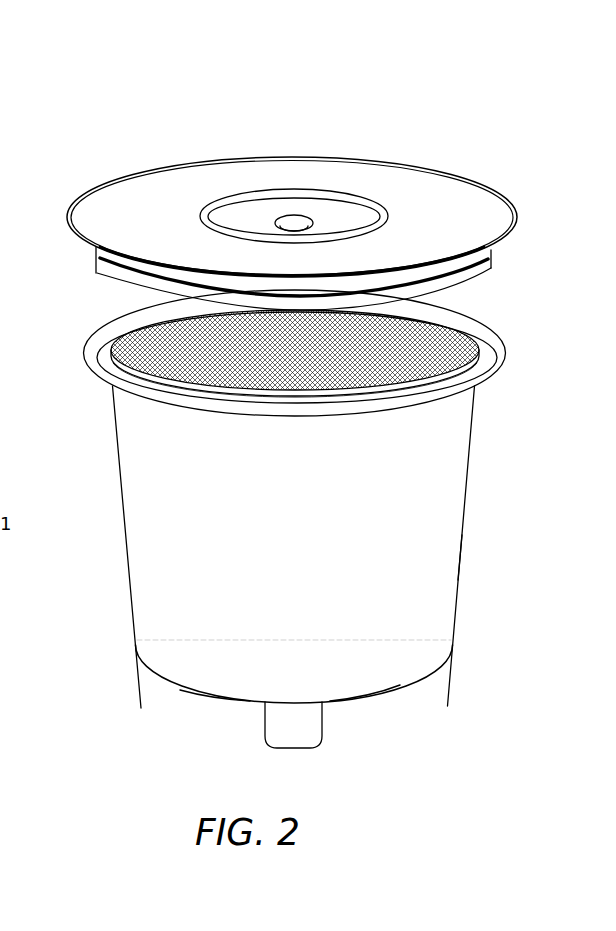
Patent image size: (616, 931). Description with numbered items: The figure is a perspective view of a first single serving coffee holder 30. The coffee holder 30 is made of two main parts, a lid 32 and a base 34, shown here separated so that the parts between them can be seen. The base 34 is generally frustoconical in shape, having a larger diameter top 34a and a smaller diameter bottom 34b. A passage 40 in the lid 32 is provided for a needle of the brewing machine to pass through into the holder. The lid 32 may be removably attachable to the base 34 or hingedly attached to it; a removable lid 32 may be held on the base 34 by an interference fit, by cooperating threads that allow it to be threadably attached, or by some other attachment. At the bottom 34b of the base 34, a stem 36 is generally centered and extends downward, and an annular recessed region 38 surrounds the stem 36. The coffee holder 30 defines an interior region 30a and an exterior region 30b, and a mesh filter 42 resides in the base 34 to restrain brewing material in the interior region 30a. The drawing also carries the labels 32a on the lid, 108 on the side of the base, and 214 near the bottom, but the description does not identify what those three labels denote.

The single serving coffee holder 30 is at (190, 136).
The interior region 30a is at (145, 344).
The exterior region 30b is at (89, 443).
The lid 32 is at (428, 198).
The recessed ring of lid 32a is at (343, 208).
The passage 40 is at (299, 228).
The mesh filter 42 is at (468, 333).
The base 34 is at (403, 545).
The larger diameter top 34a is at (474, 386).
The smaller diameter bottom 34b is at (435, 680).
The stem 36 is at (297, 723).
The annular recessed region 38 is at (196, 725).
The sidewall portion 108 is at (453, 552).
The outlet region 214 is at (377, 697).